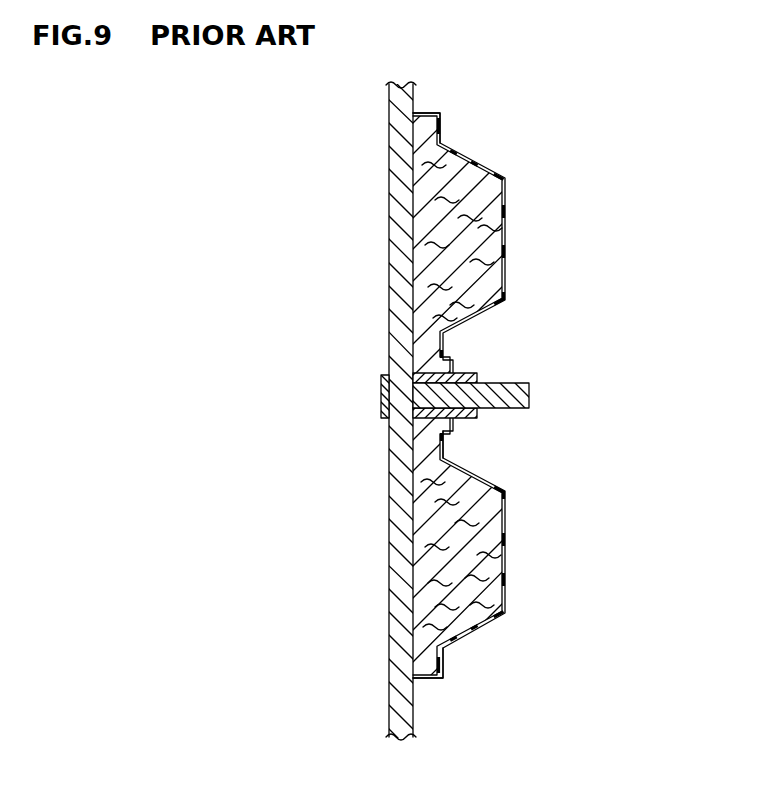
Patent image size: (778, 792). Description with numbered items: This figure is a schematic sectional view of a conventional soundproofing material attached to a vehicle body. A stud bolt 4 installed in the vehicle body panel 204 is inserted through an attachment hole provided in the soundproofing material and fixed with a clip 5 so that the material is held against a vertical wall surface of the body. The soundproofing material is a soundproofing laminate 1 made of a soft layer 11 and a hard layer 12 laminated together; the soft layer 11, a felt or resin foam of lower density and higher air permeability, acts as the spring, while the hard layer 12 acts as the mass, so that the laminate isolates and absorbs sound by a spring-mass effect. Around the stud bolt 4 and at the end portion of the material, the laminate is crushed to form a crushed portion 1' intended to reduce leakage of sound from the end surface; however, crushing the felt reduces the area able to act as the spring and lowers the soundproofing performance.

The vehicle body panel 204 is at (396, 224).
The soundproofing laminate 1 is at (540, 378).
The soft layer 11 is at (480, 213).
The hard layer 12 is at (620, 203).
The crushed portion 1' is at (502, 412).
The stud bolt 4 is at (530, 391).
The clip 5 is at (477, 417).